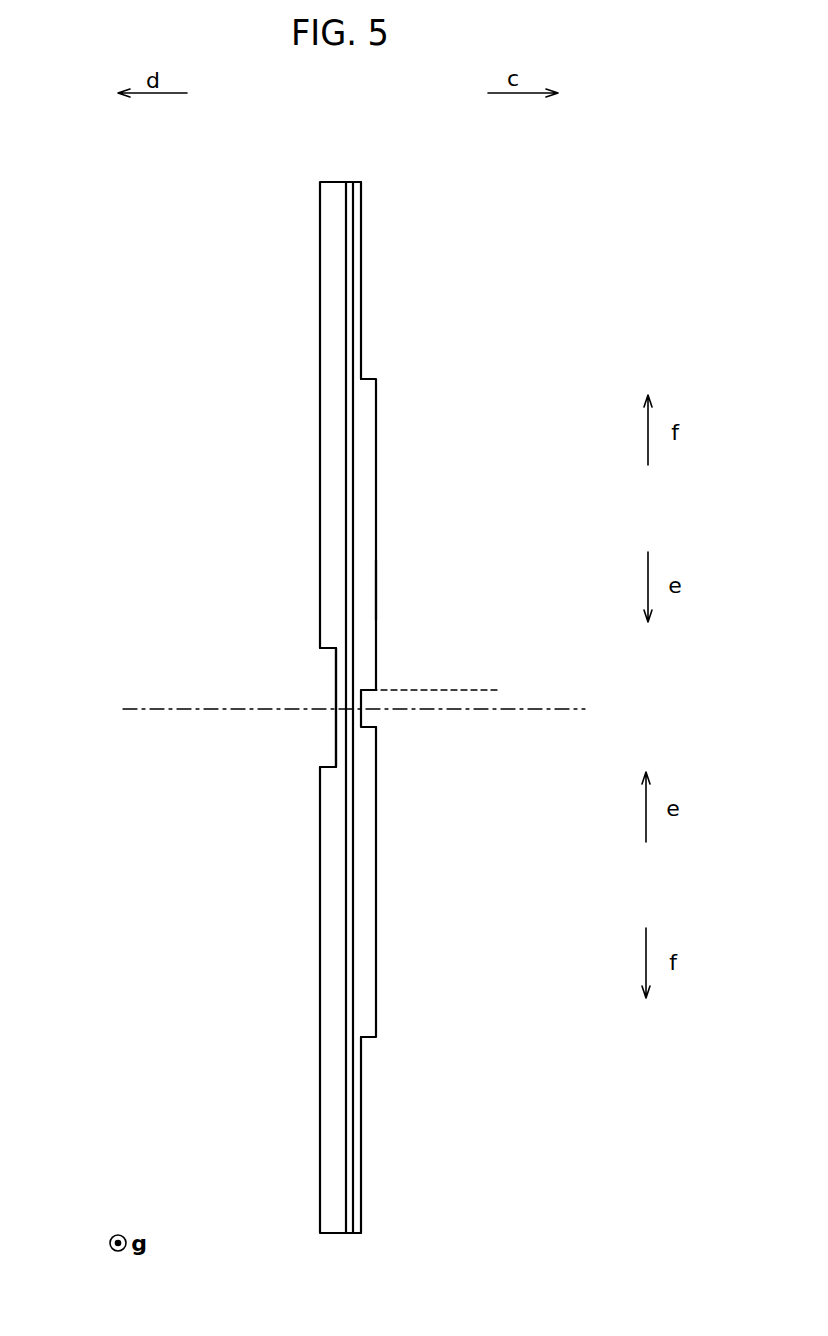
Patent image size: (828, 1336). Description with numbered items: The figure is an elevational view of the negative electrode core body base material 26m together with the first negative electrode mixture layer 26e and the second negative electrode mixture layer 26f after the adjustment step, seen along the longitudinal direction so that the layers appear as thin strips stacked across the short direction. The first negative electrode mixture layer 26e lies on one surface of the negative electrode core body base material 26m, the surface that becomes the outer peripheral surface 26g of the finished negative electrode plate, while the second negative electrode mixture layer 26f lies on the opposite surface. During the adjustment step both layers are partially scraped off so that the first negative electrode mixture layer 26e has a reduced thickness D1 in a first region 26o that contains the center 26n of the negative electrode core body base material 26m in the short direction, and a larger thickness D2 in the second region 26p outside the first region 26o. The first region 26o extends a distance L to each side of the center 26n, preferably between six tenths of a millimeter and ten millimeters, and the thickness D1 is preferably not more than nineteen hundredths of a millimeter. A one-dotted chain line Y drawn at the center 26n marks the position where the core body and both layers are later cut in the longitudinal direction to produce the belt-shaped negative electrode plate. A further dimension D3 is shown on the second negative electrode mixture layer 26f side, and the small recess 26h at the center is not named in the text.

The second negative electrode mixture layer 26f is at (338, 215).
The boundary surface 26h is at (345, 263).
The negative electrode core body base material 26m is at (348, 300).
The outer peripheral surface 26g is at (352, 505).
The first negative electrode mixture layer 26e is at (367, 430).
The center 26n is at (352, 701).
The first region 26o is at (298, 737).
The second region 26p is at (417, 597).
The one-dotted chain line Y is at (162, 708).
The distance L is at (501, 719).
The thickness D1 is at (338, 721).
The thickness D2 is at (353, 950).
The thickness D3 is at (337, 995).